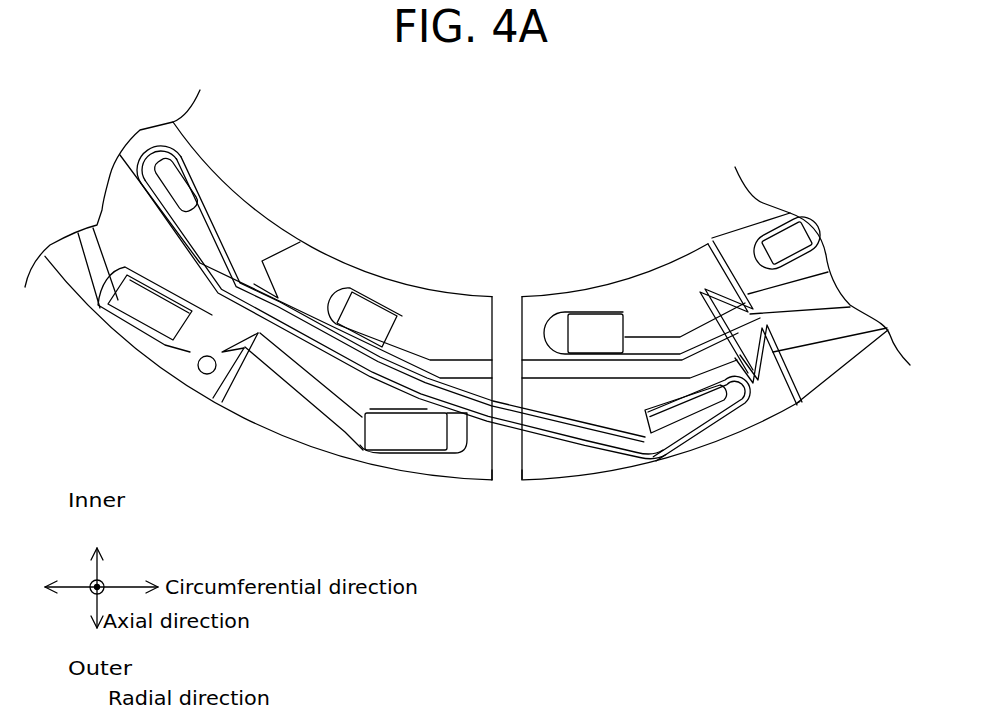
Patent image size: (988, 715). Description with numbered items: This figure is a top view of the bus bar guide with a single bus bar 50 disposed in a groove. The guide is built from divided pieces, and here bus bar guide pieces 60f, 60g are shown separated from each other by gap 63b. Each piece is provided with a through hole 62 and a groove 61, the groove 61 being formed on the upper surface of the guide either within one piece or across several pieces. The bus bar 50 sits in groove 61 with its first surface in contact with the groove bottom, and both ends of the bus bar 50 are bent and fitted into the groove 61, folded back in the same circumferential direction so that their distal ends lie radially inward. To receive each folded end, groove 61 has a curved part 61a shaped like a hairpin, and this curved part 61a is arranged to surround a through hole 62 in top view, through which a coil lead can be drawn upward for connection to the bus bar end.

The bus bar 50 is at (341, 390).
The bus bar guide piece 60f is at (583, 458).
The bus bar guide piece 60g is at (268, 413).
The groove 61 is at (263, 376).
The curved part 61a is at (200, 190).
The through hole 62 is at (167, 181).
The gap 63b is at (506, 481).